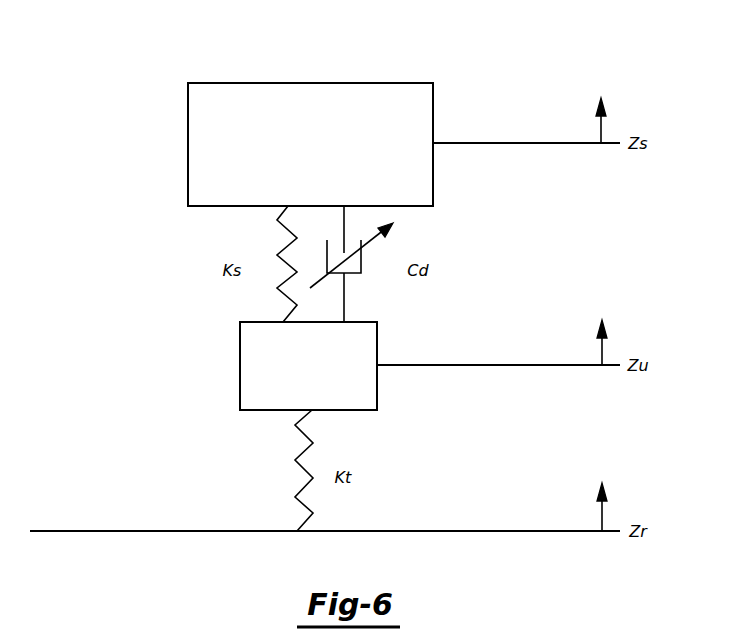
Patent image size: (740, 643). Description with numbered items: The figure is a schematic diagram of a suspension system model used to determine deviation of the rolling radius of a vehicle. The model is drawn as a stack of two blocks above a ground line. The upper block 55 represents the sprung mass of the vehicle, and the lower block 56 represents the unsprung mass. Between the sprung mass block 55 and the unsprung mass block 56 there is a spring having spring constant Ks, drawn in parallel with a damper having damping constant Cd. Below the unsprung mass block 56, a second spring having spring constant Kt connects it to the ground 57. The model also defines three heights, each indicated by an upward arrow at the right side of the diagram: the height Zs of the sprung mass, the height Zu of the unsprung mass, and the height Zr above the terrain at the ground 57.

The sprung mass block 55 is at (188, 105).
The unsprung mass block 56 is at (240, 340).
The ground 57 is at (78, 531).